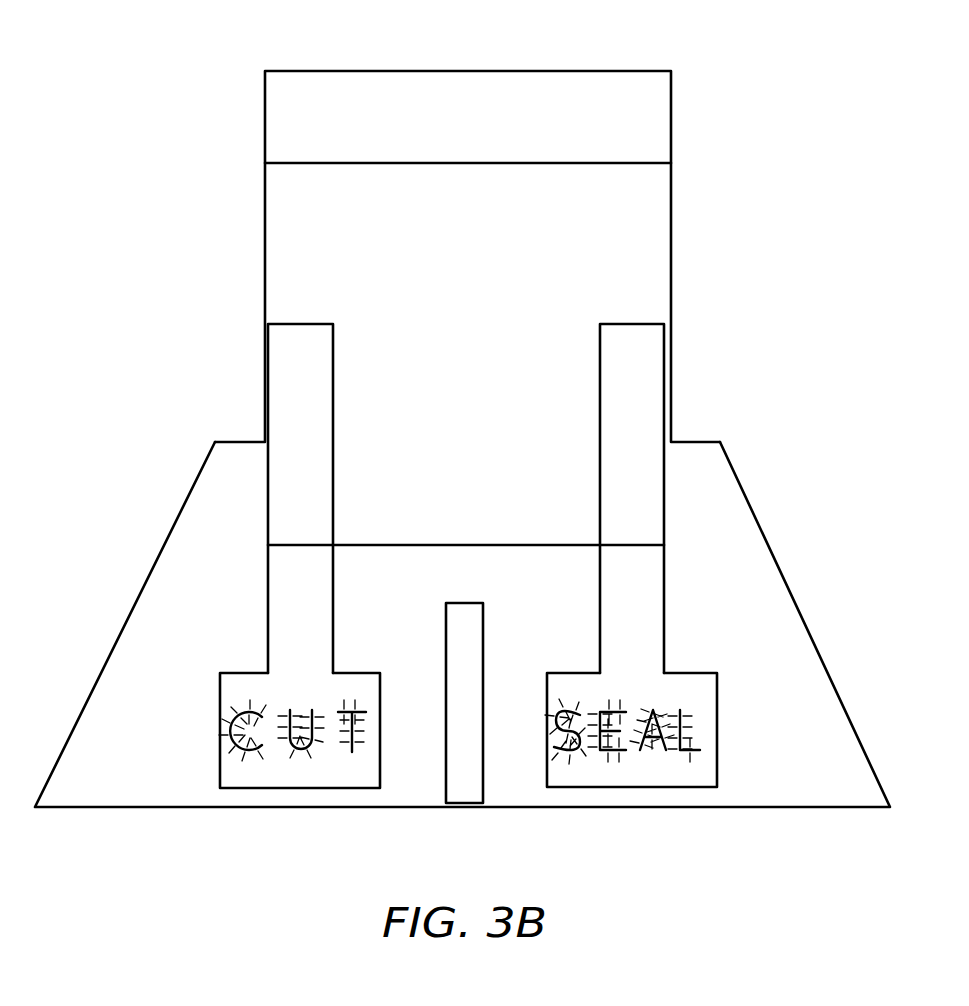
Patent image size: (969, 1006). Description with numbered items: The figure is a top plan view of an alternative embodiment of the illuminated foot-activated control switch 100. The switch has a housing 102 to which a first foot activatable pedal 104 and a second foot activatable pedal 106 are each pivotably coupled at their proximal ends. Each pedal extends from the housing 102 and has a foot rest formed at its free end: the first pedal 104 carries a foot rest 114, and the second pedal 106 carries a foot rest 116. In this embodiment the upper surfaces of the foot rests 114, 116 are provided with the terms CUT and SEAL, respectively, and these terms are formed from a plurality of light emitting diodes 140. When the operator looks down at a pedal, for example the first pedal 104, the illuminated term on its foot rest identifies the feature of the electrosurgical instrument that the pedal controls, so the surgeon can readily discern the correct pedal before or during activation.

The illuminated foot-activated control switch 100 is at (190, 326).
The housing 102 is at (657, 268).
The first foot activatable pedal 104 is at (293, 607).
The second foot activatable pedal 106 is at (642, 605).
The foot rest 114 is at (250, 790).
The foot rest 116 is at (610, 790).
The light emitting diodes 140 is at (242, 720).